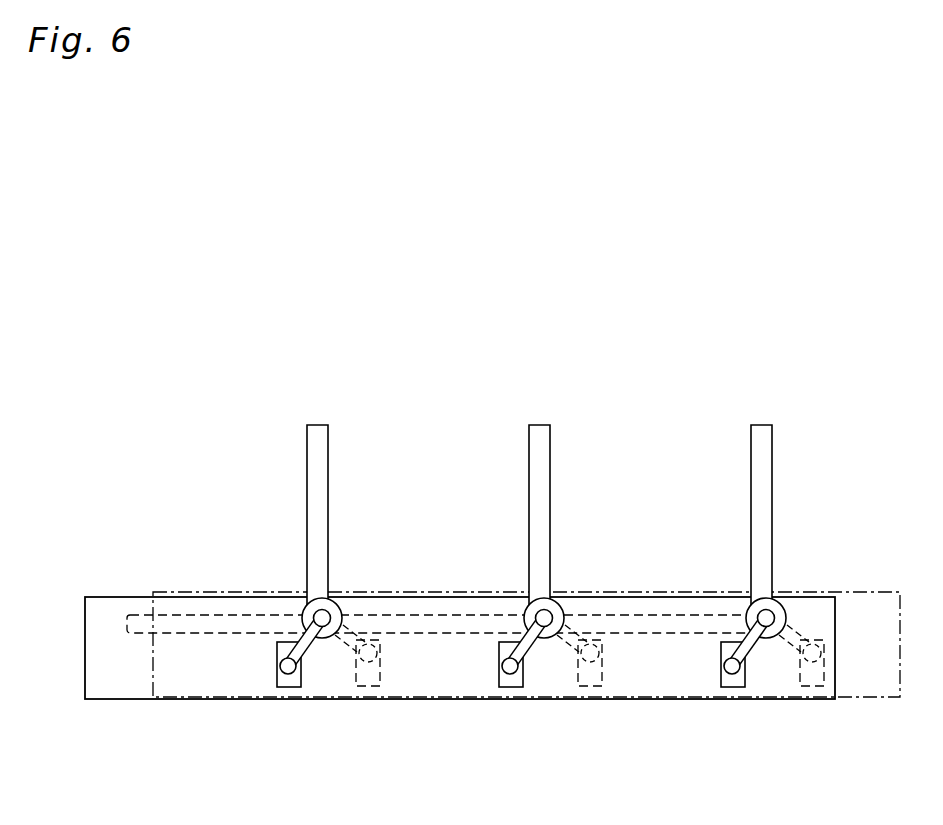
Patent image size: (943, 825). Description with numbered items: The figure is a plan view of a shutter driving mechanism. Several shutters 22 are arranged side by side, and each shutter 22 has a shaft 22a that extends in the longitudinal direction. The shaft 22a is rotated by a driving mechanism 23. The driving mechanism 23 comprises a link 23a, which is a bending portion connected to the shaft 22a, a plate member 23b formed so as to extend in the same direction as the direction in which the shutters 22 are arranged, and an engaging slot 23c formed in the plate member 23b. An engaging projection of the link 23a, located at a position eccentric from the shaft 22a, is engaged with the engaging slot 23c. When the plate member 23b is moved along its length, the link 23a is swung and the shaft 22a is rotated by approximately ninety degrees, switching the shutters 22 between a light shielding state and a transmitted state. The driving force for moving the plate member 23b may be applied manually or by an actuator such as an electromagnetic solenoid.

The shutter 22 is at (326, 458).
The shaft 22a is at (558, 605).
The driving mechanism 23 is at (494, 634).
The link 23a is at (743, 643).
The plate member 23b is at (814, 604).
The engaging slot 23c is at (728, 684).